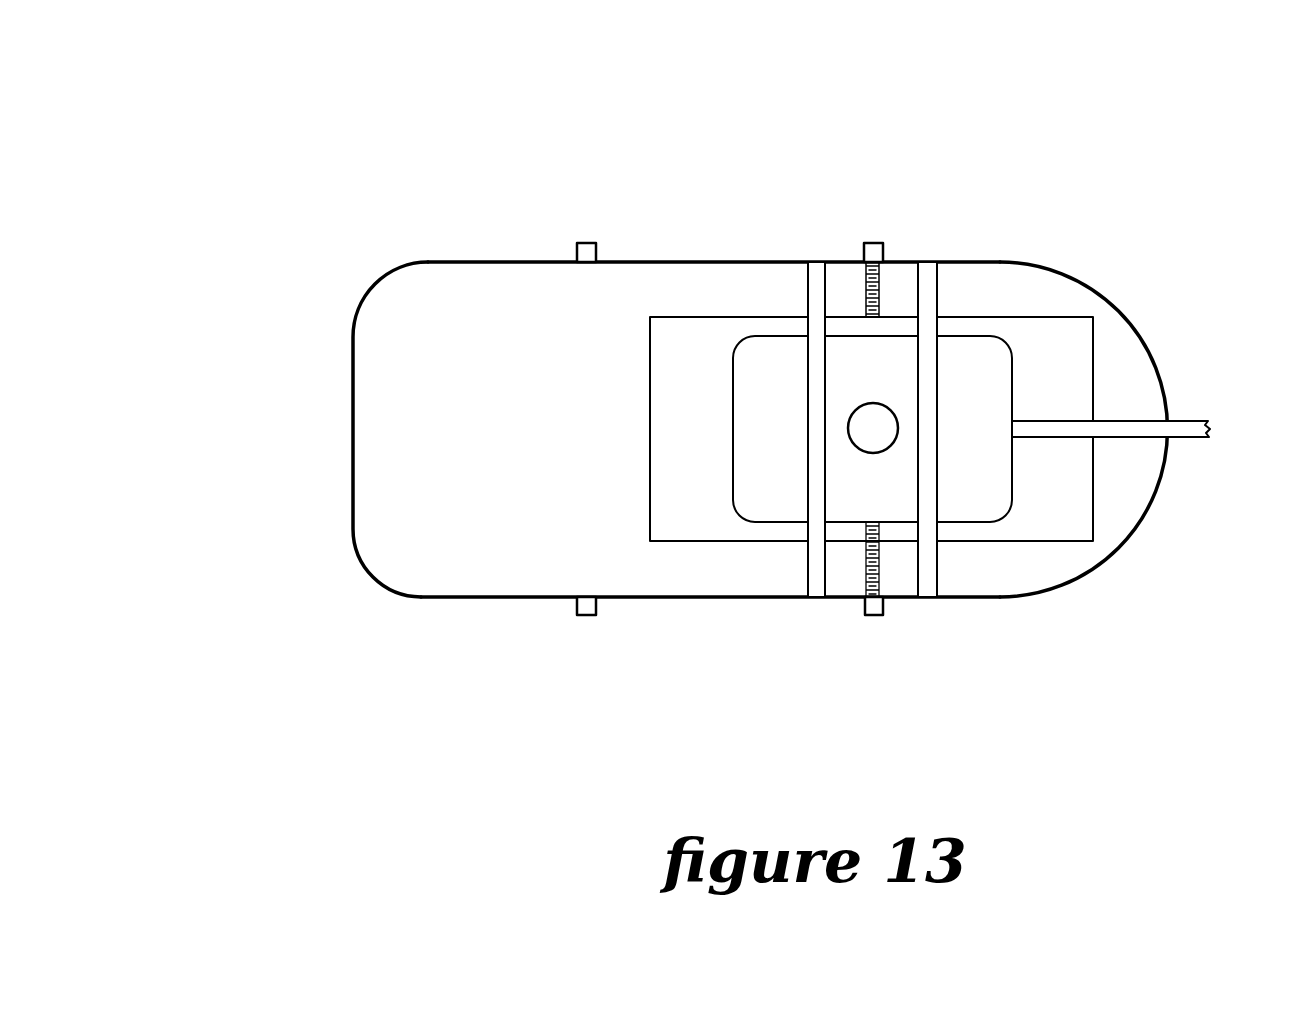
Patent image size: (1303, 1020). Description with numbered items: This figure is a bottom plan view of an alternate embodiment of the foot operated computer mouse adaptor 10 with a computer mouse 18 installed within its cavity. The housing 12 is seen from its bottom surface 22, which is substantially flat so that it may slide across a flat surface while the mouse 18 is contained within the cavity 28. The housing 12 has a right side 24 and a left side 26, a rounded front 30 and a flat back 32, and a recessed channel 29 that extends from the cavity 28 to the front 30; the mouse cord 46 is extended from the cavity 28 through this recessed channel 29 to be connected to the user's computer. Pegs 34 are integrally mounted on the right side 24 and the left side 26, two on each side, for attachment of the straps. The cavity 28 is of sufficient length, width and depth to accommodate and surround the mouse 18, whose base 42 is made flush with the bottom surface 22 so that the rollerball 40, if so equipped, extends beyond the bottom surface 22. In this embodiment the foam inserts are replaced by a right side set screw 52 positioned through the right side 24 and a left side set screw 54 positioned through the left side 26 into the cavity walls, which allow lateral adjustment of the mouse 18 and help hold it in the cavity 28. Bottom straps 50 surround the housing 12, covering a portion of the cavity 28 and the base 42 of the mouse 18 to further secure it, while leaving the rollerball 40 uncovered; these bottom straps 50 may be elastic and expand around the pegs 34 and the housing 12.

The foot operated computer mouse adaptor 10 is at (721, 430).
The housing 12 is at (691, 430).
The computer mouse 18 is at (988, 498).
The bottom surface 22 is at (503, 433).
The right side 24 is at (714, 600).
The left side 26 is at (712, 260).
The cavity 28 is at (665, 433).
The recessed channel 29 is at (1131, 441).
The front 30 is at (1121, 307).
The back 32 is at (353, 436).
The pegs 34 is at (586, 243).
The rollerball 40 is at (892, 447).
The base 42 is at (750, 433).
The mouse cord 46 is at (1050, 418).
The bottom straps 50 is at (816, 262).
The right side set screw 52 is at (880, 560).
The left side set screw 54 is at (880, 300).